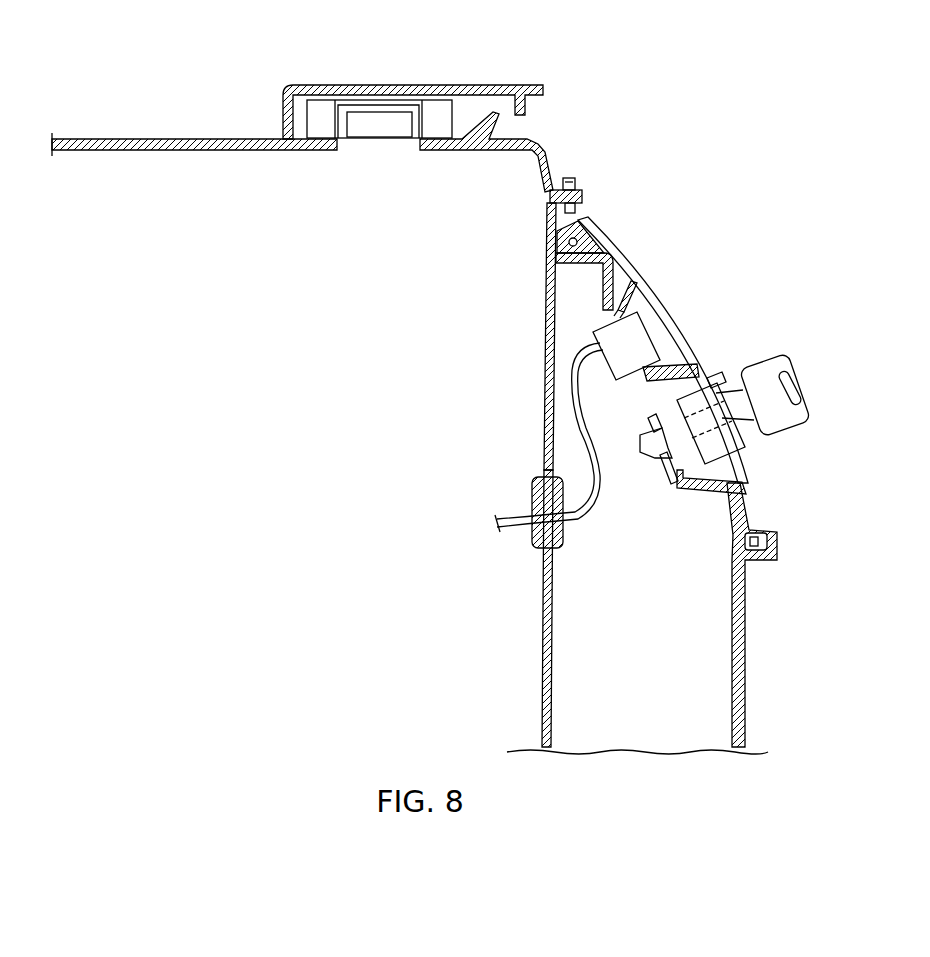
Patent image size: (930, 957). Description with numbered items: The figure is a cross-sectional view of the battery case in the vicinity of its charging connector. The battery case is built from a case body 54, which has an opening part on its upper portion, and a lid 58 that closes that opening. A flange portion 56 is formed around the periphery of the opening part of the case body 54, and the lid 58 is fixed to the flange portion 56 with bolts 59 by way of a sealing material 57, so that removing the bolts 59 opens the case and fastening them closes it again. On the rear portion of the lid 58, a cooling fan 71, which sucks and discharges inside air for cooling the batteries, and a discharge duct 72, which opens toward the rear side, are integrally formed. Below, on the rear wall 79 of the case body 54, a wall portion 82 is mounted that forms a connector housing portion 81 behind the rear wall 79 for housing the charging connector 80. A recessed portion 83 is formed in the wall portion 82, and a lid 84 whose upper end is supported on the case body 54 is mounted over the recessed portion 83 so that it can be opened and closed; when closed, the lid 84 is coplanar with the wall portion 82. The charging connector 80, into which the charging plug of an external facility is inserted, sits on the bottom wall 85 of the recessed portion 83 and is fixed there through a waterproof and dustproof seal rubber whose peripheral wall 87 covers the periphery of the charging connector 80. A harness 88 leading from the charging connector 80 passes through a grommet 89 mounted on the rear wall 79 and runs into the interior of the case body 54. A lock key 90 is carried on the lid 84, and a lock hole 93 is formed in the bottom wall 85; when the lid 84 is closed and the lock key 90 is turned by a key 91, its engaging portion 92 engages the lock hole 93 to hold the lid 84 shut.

The case body 54 is at (547, 300).
The flange portion 56 is at (580, 207).
The sealing material 57 is at (583, 196).
The lid 58 is at (115, 152).
The bolt 59 is at (571, 178).
The cooling fan 71 is at (382, 125).
The discharge duct 72 is at (441, 86).
The rear wall 79 is at (553, 620).
The charging connector 80 is at (651, 336).
The connector housing portion 81 is at (670, 588).
The wall portion 82 is at (746, 500).
The recessed portion 83 is at (680, 388).
The lid 84 is at (688, 340).
The bottom wall 85 is at (690, 476).
The peripheral wall 87 is at (636, 290).
The harness 88 is at (598, 472).
The grommet 89 is at (533, 493).
The lock key 90 is at (664, 472).
The key 91 is at (808, 378).
The engaging portion 92 is at (651, 424).
The lock hole 93 is at (650, 439).